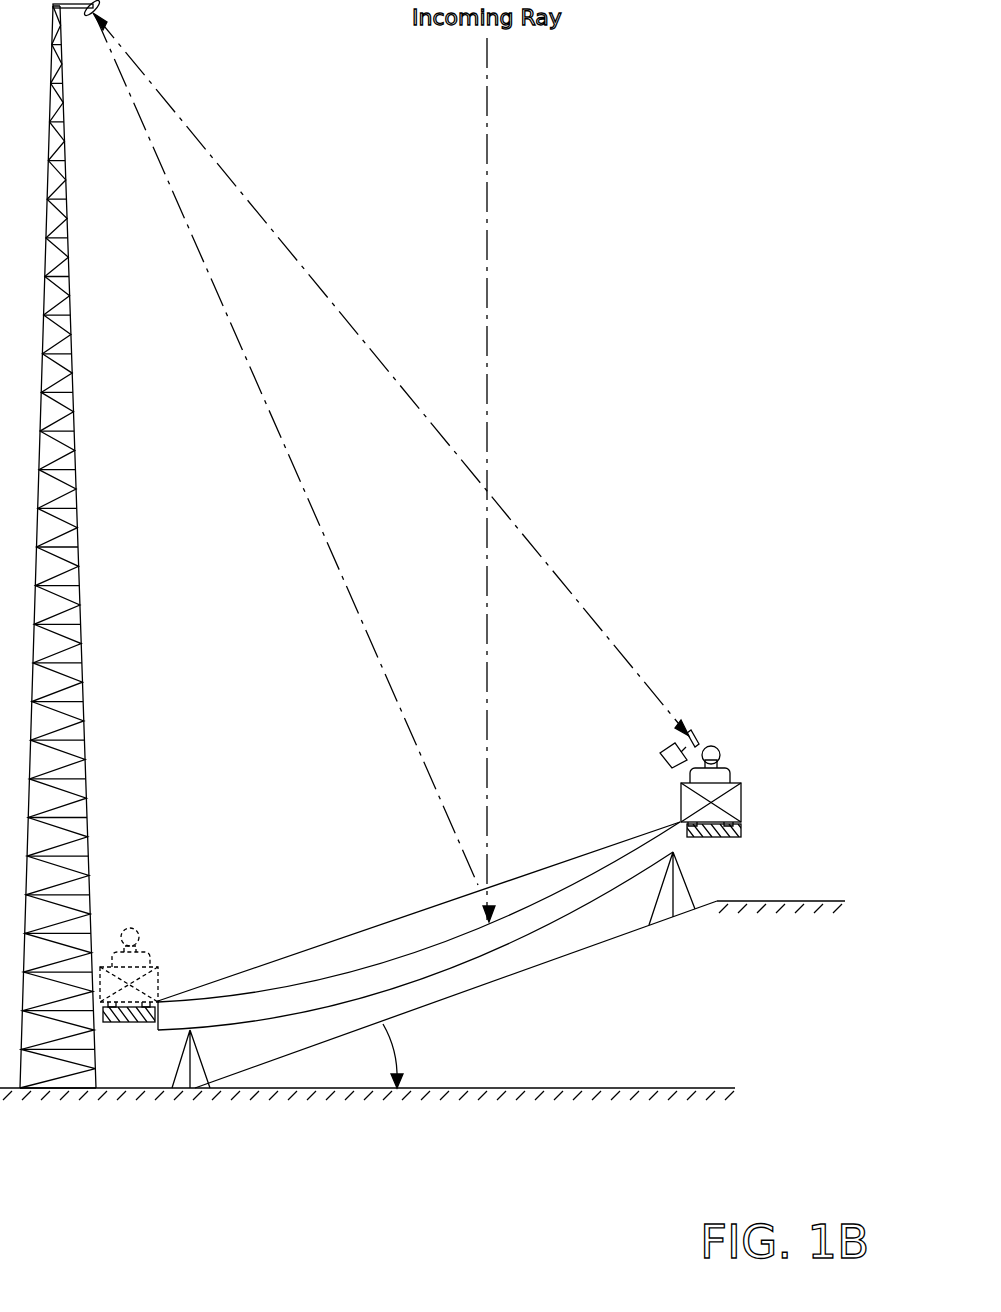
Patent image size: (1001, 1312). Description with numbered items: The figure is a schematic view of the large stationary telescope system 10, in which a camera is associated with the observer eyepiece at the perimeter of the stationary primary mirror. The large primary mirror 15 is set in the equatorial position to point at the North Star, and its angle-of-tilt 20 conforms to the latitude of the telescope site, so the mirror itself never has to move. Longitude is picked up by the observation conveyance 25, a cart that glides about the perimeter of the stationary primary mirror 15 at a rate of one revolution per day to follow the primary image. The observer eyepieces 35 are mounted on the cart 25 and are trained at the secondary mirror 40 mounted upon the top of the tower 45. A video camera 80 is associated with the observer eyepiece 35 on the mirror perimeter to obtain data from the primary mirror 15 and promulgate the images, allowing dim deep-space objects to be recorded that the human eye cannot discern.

The large stationary telescope system 10 is at (648, 145).
The primary mirror 15 is at (320, 943).
The angle-of-tilt 20 is at (437, 970).
The observation conveyance 25 is at (743, 783).
The observer eyepiece 35 is at (697, 745).
The secondary mirror 40 is at (98, 12).
The tower 45 is at (76, 540).
The video camera 80 is at (662, 760).